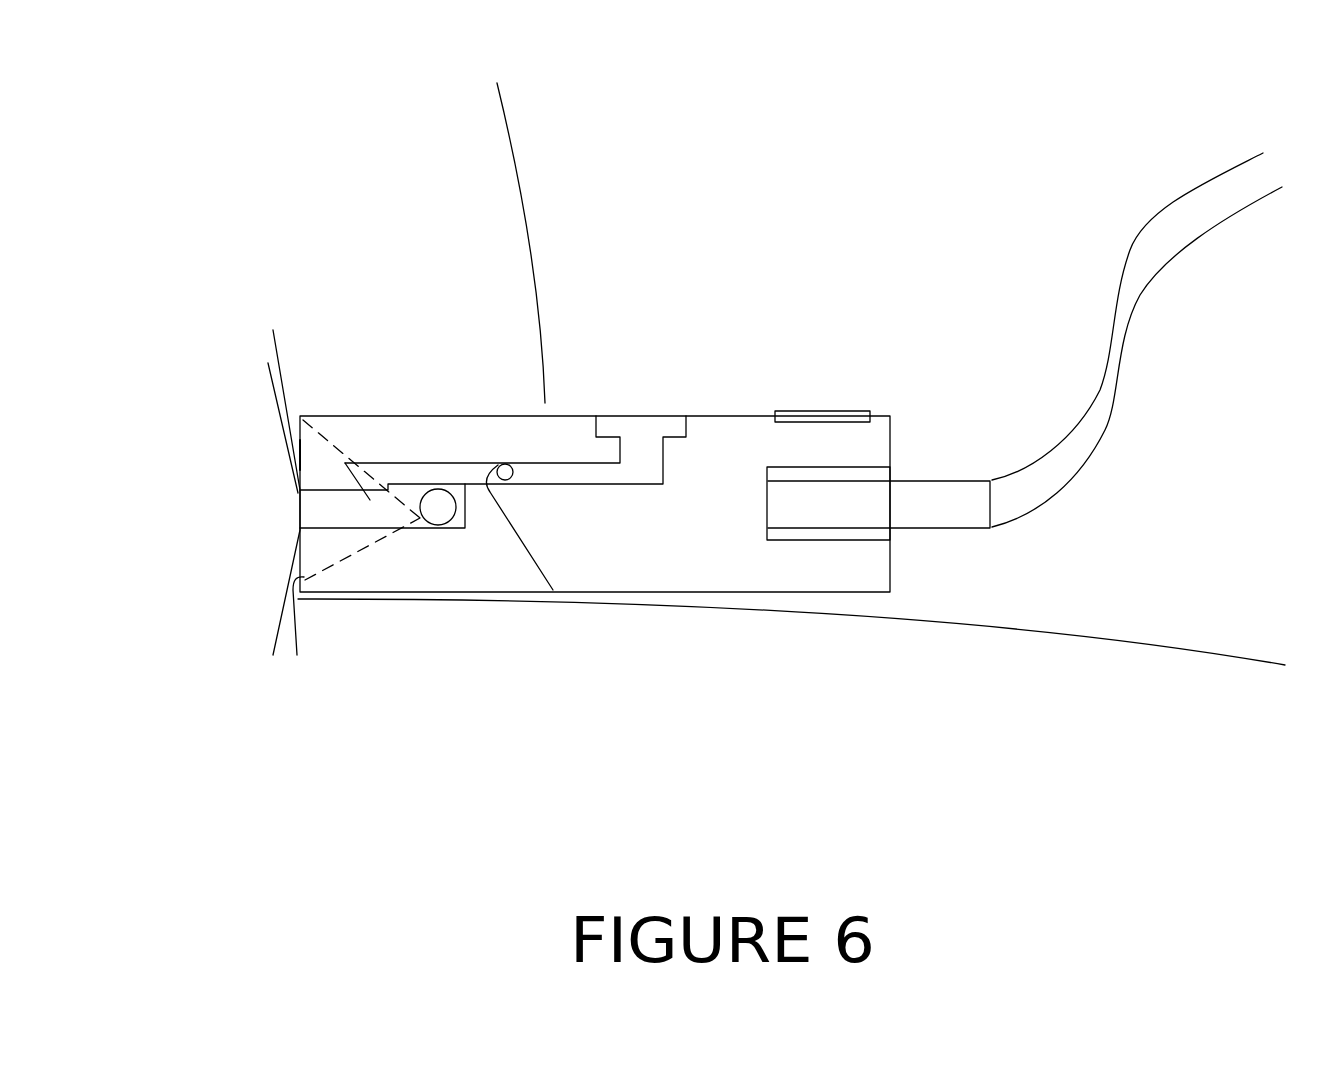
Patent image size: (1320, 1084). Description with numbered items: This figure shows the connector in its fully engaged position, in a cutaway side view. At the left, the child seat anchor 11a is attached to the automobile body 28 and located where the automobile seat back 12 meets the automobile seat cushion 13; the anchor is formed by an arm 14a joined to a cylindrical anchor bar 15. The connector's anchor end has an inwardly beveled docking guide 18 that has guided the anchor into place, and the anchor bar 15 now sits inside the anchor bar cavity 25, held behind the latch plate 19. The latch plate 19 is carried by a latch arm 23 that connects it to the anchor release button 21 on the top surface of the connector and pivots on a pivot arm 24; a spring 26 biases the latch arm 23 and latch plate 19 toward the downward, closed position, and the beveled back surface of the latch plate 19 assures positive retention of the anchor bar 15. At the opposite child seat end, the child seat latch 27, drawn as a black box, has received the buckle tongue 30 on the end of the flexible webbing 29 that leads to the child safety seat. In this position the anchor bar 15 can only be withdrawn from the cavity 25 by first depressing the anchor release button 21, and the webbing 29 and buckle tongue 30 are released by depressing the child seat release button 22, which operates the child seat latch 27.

The child seat anchor 11a is at (340, 530).
The automobile seat back 12 is at (527, 147).
The automobile seat cushion 13 is at (633, 615).
The arm 14a is at (270, 476).
The anchor bar 15 is at (437, 513).
The docking guide 18 is at (303, 637).
The latch plate 19 is at (385, 500).
The anchor release button 21 is at (640, 408).
The child seat release button 22 is at (820, 410).
The latch arm 23 is at (418, 470).
The pivot arm 24 is at (505, 463).
The anchor bar cavity 25 is at (453, 530).
The spring 26 is at (500, 497).
The child seat latch 27 is at (870, 538).
The automobile body 28 is at (282, 442).
The flexible webbing 29 is at (1130, 458).
The buckle tongue 30 is at (950, 505).